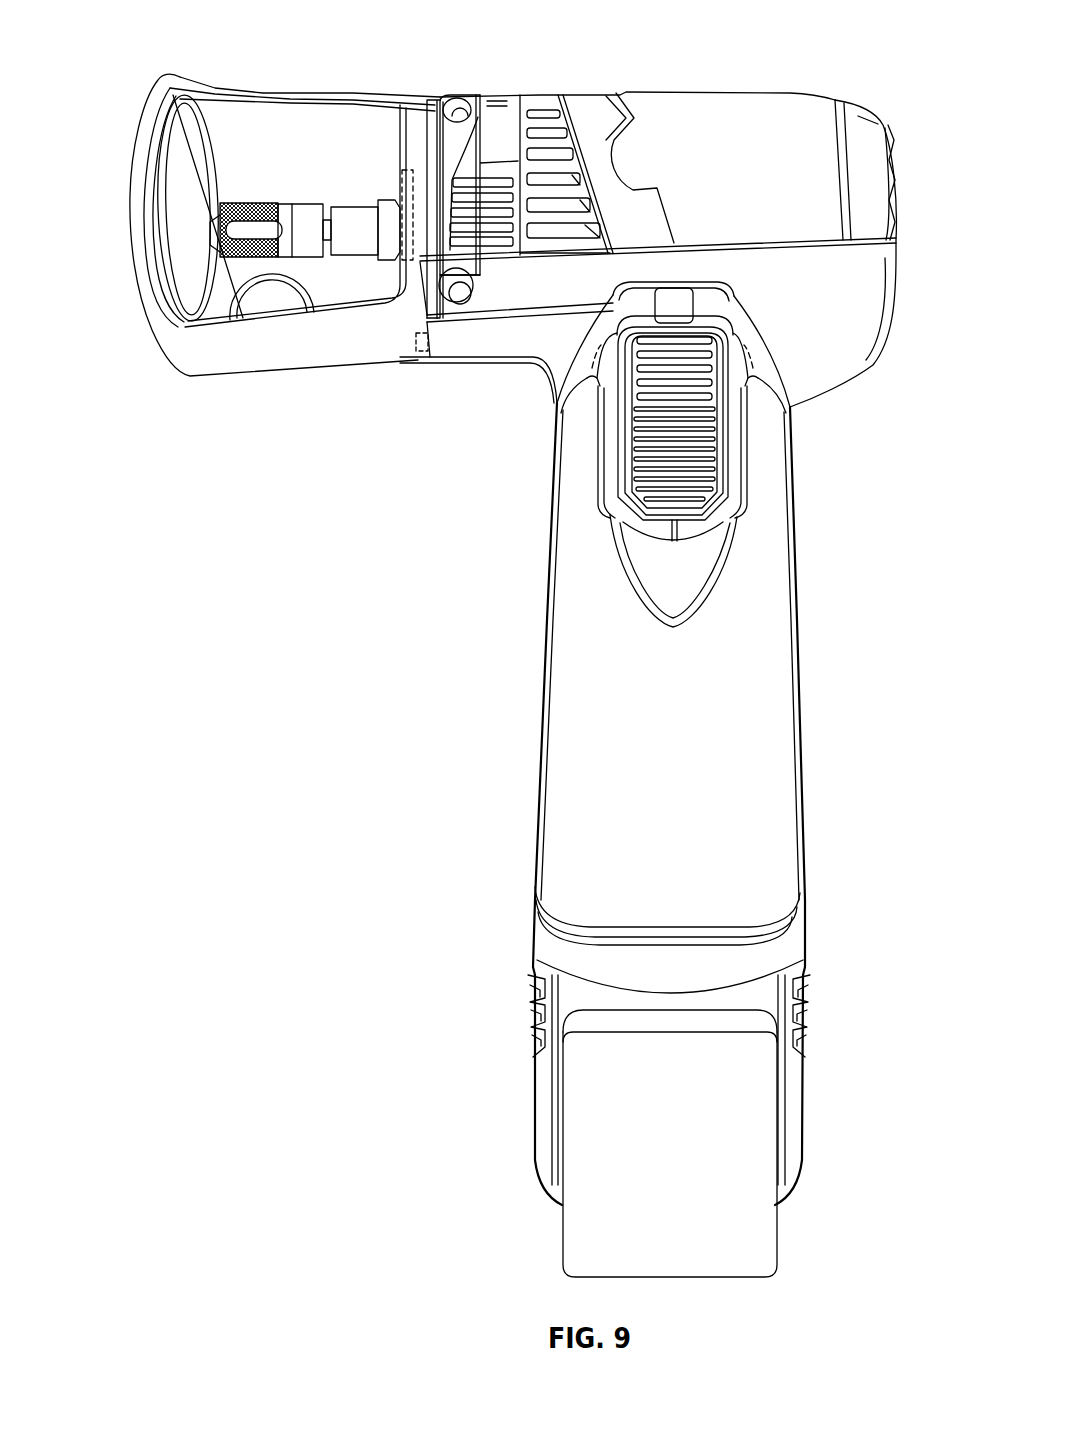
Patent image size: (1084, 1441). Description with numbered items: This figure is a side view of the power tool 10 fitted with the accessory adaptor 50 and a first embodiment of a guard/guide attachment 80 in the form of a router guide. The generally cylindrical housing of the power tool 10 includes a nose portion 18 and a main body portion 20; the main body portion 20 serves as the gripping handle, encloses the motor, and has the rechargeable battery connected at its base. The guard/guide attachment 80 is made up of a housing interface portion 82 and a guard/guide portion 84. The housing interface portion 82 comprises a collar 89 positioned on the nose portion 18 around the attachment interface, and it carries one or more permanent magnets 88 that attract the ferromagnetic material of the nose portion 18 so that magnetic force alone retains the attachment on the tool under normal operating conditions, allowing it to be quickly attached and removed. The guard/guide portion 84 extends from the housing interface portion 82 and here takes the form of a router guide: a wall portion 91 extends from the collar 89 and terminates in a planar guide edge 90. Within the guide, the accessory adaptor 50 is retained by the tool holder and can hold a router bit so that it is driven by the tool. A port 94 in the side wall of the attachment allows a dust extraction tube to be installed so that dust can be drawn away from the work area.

The power tool 10 is at (897, 125).
The nose portion 18 is at (653, 92).
The main body portion 20 is at (806, 733).
The accessory adaptor 50 is at (293, 192).
The guard/guide attachment 80 is at (247, 452).
The housing interface portion 82 is at (394, 403).
The guard/guide portion 84 is at (153, 402).
The permanent magnets 88 is at (398, 196).
The collar 89 is at (403, 147).
The planar guide edge 90 is at (137, 148).
The wall portion 91 is at (267, 98).
The port 94 is at (173, 95).